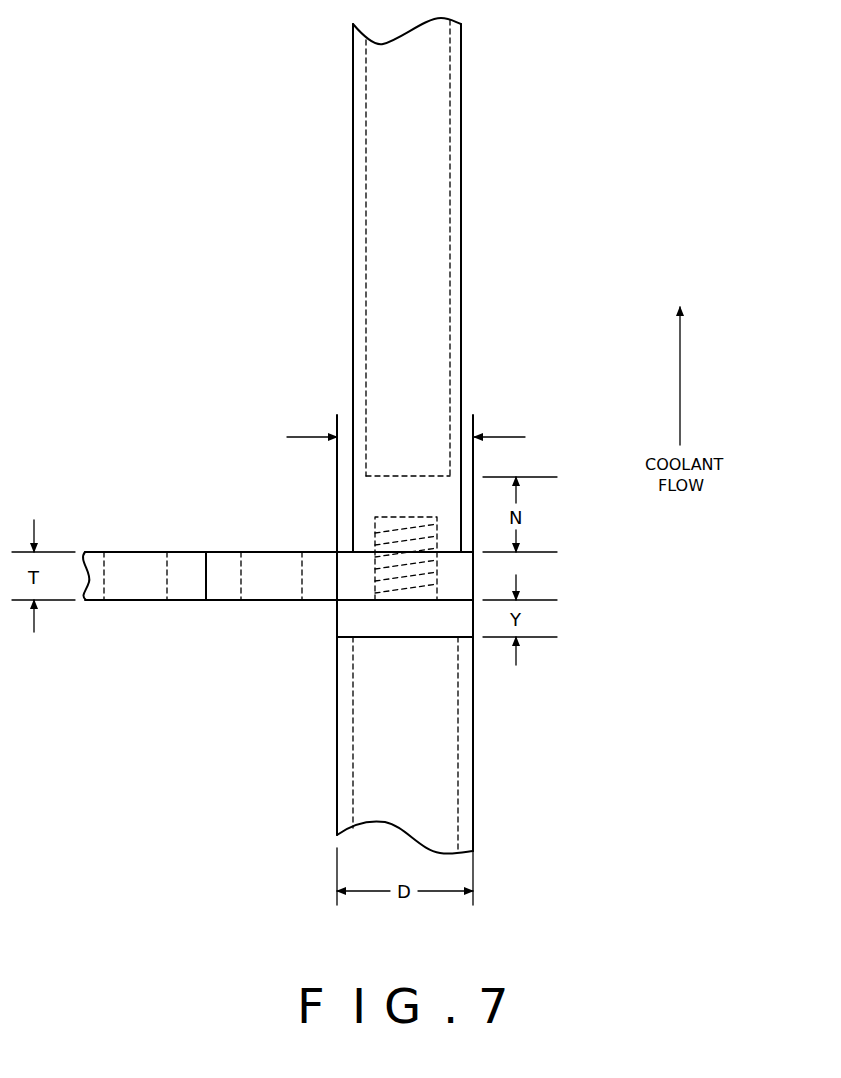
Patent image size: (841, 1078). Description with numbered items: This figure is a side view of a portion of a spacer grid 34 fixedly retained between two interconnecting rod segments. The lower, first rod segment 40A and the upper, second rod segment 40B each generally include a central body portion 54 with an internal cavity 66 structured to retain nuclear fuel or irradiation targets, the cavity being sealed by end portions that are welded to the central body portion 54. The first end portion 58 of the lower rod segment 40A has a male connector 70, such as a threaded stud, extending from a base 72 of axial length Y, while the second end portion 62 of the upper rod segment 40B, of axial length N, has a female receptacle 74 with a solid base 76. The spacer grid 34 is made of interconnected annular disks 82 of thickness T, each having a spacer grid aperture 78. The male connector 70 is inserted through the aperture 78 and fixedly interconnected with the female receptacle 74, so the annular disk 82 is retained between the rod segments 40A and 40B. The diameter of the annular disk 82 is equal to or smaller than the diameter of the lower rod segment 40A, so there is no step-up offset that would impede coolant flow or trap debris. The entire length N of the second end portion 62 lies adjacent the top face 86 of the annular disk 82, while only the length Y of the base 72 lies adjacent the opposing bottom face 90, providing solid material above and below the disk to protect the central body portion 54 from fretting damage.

The spacer grid 34 is at (125, 540).
The first rod segment 40A is at (345, 748).
The second rod segment 40B is at (357, 265).
The central body portion 54 is at (339, 436).
The first end portion 58 is at (328, 630).
The second end portion 62 is at (342, 482).
The internal cavity 66 is at (460, 197).
The male connector 70 is at (260, 585).
The base 72 is at (353, 617).
The female receptacle 74 is at (377, 530).
The solid base 76 is at (373, 497).
The spacer grid aperture 78 is at (137, 587).
The annular disk 82 is at (353, 568).
The top face 86 is at (447, 550).
The bottom face 90 is at (448, 605).